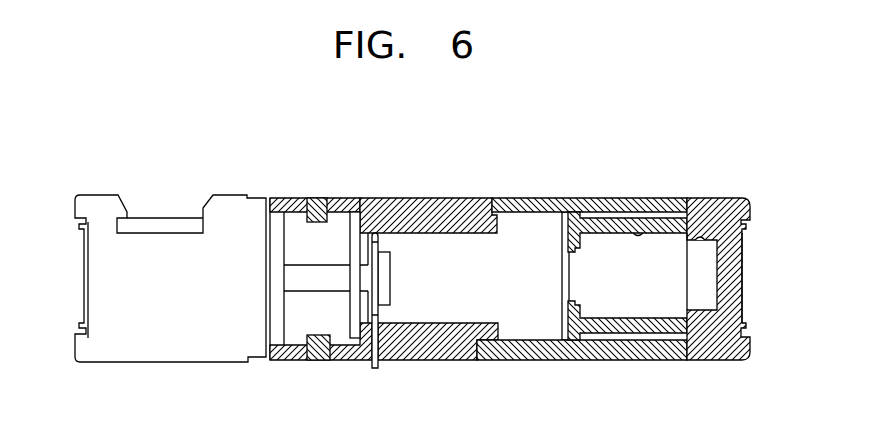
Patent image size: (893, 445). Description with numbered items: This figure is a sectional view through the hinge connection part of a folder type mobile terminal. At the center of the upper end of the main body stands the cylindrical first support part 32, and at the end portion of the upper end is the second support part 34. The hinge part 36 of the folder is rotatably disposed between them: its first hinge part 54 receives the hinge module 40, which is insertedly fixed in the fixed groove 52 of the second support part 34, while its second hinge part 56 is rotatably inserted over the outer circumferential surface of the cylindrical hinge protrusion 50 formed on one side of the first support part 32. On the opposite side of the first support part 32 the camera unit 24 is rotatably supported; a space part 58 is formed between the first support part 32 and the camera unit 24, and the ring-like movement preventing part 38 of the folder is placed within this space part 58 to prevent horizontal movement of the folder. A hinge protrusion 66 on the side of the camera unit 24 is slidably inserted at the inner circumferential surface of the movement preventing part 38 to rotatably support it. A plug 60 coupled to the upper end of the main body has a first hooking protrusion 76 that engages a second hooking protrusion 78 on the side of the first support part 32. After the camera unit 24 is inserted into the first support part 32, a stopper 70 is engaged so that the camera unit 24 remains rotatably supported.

The camera unit 24 is at (213, 196).
The hinge protrusion 66 is at (268, 221).
The space part 58 is at (276, 198).
The movement preventing part 38 is at (298, 198).
The first support part 32 is at (411, 198).
The plug 60 is at (316, 198).
The first hooking protrusion 76 is at (329, 198).
The second hooking protrusion 78 is at (355, 198).
The stopper 70 is at (376, 369).
The second hinge part 56 is at (478, 214).
The hinge protrusion 50 is at (491, 212).
The hinge part 36 is at (603, 198).
The first hinge part 54 is at (634, 232).
The hinge module 40 is at (665, 240).
The fixed groove 52 is at (701, 242).
The second support part 34 is at (734, 196).